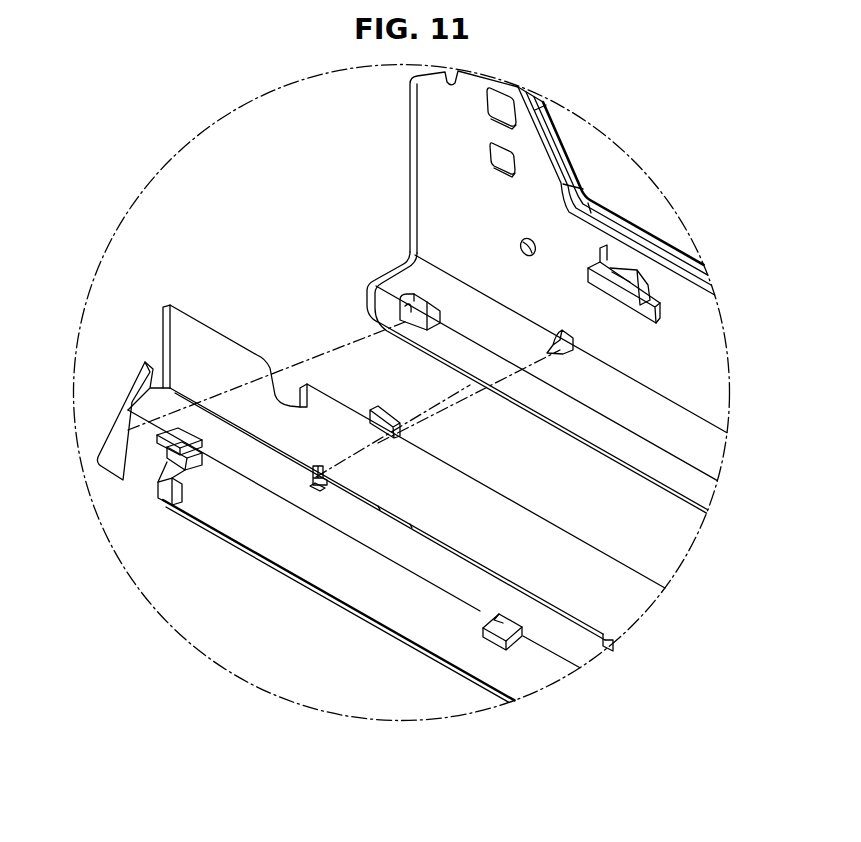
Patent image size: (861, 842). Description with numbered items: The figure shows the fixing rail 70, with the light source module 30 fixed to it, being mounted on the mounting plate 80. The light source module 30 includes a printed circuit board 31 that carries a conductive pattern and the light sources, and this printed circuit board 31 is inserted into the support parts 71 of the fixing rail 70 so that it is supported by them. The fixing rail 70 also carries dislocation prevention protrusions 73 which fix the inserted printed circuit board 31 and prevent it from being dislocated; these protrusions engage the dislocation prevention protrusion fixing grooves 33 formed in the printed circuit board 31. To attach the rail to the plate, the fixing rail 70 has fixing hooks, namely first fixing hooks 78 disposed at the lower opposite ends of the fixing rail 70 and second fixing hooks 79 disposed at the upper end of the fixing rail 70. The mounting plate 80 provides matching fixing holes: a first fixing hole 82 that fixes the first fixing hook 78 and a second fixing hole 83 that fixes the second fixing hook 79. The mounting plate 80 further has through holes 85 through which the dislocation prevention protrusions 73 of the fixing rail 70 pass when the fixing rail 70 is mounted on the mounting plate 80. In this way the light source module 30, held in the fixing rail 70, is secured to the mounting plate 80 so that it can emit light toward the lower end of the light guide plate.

The light source module 30 is at (281, 495).
The printed circuit board 31 is at (388, 533).
The dislocation prevention protrusion fixing groove 33 is at (318, 488).
The fixing rail 70 is at (129, 350).
The support part 71 is at (140, 417).
The dislocation prevention protrusion 73 is at (320, 466).
The first fixing hook 78 is at (192, 473).
The second fixing hook 79 is at (398, 425).
The mounting plate 80 is at (402, 139).
The first fixing hole 82 is at (405, 328).
The second fixing hole 83 is at (648, 287).
The through hole 85 is at (576, 350).